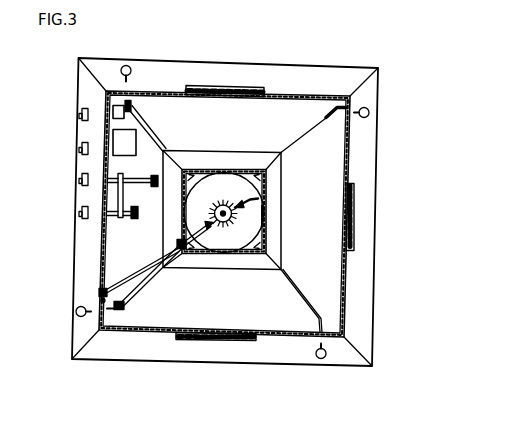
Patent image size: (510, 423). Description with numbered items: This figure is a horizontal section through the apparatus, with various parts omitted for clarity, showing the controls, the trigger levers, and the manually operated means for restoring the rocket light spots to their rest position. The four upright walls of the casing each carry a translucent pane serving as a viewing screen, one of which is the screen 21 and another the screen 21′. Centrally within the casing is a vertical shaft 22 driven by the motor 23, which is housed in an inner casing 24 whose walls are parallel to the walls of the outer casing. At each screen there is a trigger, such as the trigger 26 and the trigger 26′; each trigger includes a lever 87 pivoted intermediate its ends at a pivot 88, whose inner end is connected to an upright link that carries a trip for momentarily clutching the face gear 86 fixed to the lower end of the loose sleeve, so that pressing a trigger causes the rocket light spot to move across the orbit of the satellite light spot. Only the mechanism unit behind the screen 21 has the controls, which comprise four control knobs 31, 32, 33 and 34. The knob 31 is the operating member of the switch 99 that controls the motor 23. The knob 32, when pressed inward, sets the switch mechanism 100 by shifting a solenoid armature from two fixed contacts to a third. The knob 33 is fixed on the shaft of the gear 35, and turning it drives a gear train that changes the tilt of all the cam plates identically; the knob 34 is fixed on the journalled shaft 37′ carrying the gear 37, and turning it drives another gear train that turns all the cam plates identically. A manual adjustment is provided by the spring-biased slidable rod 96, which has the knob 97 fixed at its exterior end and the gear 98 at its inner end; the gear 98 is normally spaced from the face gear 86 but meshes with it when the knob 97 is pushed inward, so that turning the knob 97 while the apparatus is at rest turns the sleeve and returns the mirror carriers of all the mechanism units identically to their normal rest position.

The viewing screen 21 is at (101, 247).
The viewing screen 21′ is at (222, 87).
The vertical shaft 22 is at (257, 198).
The motor 23 is at (263, 221).
The inner casing 24 is at (276, 244).
The trigger 26 is at (73, 306).
The trigger 26′ is at (128, 64).
The control knob 31 is at (79, 114).
The control knob 32 is at (79, 148).
The control knob 33 is at (79, 178).
The control knob 34 is at (79, 212).
The gear 35 is at (138, 176).
The gear 37 is at (134, 219).
The journalled shaft 37′ is at (118, 220).
The face gear 86 is at (228, 195).
The lever 87 is at (149, 279).
The pivot 88 is at (124, 299).
The slidable rod 96 is at (146, 269).
The knob 97 is at (94, 297).
The gear 98 is at (205, 236).
The switch 99 is at (89, 98).
The switch mechanism 100 is at (128, 143).